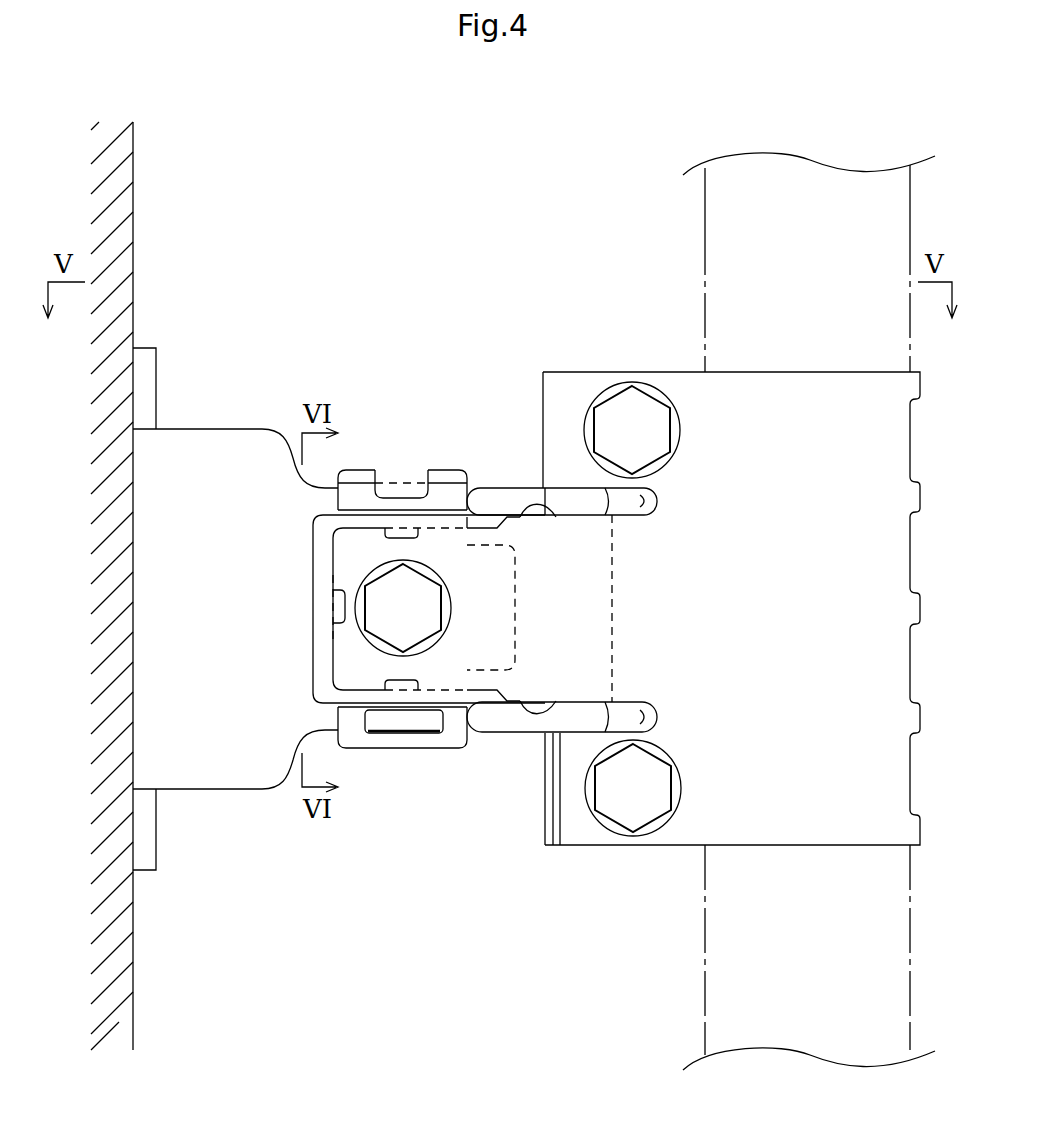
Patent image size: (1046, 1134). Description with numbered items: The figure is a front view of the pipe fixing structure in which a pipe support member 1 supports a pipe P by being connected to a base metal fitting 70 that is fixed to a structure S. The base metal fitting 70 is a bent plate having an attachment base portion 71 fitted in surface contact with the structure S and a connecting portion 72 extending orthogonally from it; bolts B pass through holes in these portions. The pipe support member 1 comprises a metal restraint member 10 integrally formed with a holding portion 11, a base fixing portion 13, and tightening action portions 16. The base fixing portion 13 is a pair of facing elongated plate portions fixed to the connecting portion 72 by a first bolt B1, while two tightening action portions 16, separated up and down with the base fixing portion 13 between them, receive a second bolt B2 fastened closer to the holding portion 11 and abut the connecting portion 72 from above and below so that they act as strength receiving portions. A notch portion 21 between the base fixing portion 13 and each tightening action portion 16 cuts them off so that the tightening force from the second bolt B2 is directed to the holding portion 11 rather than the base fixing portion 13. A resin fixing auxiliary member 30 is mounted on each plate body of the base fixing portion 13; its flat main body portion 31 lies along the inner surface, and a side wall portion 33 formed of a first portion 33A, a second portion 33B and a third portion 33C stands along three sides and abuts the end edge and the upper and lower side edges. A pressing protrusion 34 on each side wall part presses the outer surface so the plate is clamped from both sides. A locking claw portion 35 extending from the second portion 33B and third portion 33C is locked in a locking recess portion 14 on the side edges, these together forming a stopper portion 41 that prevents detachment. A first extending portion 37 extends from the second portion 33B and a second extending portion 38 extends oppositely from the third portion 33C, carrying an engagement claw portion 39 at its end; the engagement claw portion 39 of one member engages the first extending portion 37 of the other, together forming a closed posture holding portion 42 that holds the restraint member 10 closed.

The pipe support member 1 is at (494, 186).
The structure S is at (133, 200).
The pipe P is at (703, 215).
The restraint member 10 is at (708, 586).
The holding portion 11 is at (850, 563).
The base fixing portion 13 is at (450, 657).
The locking recess portion 14 is at (530, 519).
The tightening action portion 16 is at (562, 421).
The notch portion 21 is at (655, 495).
The fixing auxiliary member 30 is at (364, 589).
The main body portion 31 is at (515, 580).
The side wall portion 33 is at (365, 589).
The first portion 33A is at (322, 568).
The second portion 33B is at (327, 453).
The third portion 33C is at (433, 768).
The pressing protrusion 34 is at (400, 540).
The locking claw portion 35 is at (515, 528).
The first extending portion 37 is at (433, 490).
The second extending portion 38 is at (430, 705).
The engagement claw portion 39 is at (400, 490).
The stopper portion 41 is at (595, 609).
The closed posture holding portion 42 is at (403, 422).
The base metal fitting 70 is at (235, 583).
The attachment base portion 71 is at (160, 356).
The connecting portion 72 is at (208, 770).
The bolt B is at (572, 609).
The first bolt B1 is at (425, 590).
The second bolt B2 is at (648, 432).